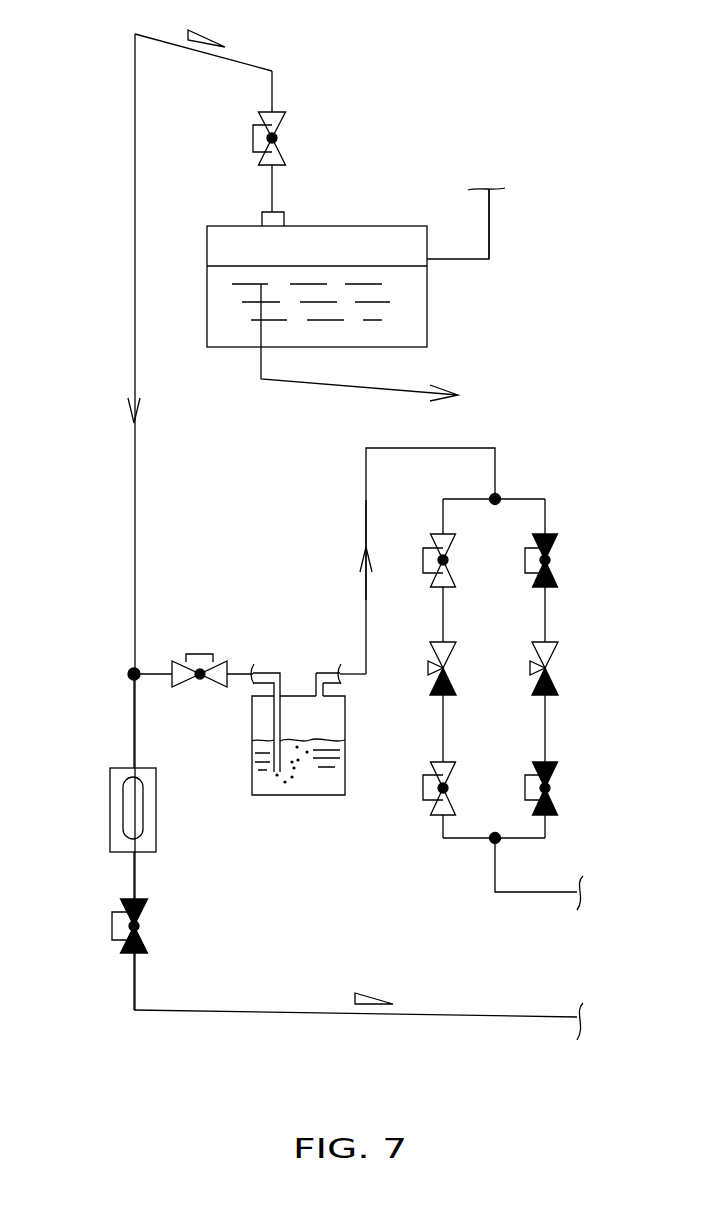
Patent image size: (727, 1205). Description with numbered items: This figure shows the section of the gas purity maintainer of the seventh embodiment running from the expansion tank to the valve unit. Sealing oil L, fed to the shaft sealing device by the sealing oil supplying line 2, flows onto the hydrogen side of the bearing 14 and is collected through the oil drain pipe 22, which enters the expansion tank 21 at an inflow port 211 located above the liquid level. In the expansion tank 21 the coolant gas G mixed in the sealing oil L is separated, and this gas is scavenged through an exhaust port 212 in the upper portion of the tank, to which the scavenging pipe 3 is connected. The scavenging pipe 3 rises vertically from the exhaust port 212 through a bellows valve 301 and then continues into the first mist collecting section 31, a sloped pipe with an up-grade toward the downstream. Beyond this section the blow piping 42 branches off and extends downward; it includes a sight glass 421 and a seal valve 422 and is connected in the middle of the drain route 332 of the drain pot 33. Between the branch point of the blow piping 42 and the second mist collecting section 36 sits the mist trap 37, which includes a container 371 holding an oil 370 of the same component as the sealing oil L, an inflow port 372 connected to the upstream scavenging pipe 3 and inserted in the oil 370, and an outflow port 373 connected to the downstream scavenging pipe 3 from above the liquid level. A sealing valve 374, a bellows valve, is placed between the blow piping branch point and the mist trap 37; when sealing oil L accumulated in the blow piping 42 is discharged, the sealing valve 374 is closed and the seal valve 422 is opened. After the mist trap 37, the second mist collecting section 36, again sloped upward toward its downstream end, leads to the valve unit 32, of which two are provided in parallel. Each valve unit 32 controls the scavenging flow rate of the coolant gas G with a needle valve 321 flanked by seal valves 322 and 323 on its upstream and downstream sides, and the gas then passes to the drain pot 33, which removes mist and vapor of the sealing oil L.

The scavenging pipe 3 is at (135, 125).
The first mist collecting section 31 is at (255, 63).
The bellows valve 301 is at (288, 138).
The exhaust port 212 is at (276, 210).
The expansion tank 21 is at (372, 226).
The coolant gas G is at (413, 233).
The sealing oil L is at (427, 317).
The sealing oil supplying line 2 is at (369, 347).
The inflow port 211 is at (428, 258).
The bearing 14 is at (486, 173).
The oil drain pipe 22 is at (490, 214).
The second mist collecting section 36 is at (366, 540).
The valve unit 32 is at (436, 616).
The needle valve 321 is at (450, 665).
The seal valve 322 is at (525, 565).
The seal valve 323 is at (450, 777).
The drain pot 33 is at (555, 874).
The sealing valve 374 is at (202, 655).
The inflow port 372 is at (265, 668).
The outflow port 373 is at (323, 668).
The container 371 is at (346, 722).
The oil 370 is at (275, 792).
The mist trap 37 is at (339, 812).
The blow piping 42 is at (133, 738).
The sight glass 421 is at (110, 808).
The seal valve 422 is at (112, 922).
The drain route 332 is at (379, 1016).